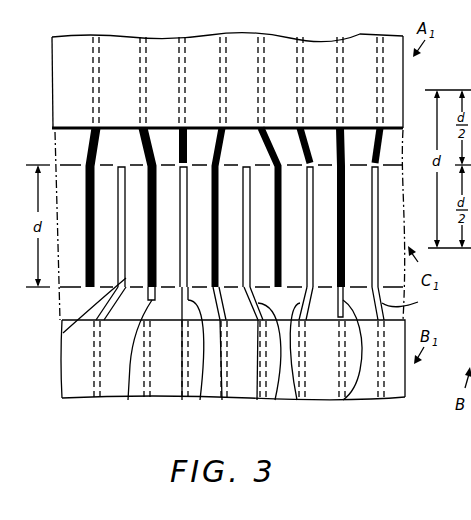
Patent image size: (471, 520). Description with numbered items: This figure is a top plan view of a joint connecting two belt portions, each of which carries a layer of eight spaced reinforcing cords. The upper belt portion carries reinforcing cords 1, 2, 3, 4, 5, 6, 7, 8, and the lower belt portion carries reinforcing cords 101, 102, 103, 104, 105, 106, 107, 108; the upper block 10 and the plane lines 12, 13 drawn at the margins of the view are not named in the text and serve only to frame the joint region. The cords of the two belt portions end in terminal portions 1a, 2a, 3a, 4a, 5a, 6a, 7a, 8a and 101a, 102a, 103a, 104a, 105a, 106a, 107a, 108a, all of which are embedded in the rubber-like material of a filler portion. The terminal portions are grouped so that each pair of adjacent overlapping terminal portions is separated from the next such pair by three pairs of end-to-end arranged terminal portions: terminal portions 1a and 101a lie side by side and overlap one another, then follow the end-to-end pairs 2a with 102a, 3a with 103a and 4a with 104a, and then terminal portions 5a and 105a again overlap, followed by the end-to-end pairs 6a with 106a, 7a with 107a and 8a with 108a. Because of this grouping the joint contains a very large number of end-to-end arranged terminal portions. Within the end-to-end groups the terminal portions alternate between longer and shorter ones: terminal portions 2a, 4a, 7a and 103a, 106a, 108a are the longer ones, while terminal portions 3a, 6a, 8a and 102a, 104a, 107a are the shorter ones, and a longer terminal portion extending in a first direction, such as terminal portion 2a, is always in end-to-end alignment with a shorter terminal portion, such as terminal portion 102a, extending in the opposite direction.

The upper insulating block 10 is at (52, 86).
The reinforcing cord 1 is at (92, 64).
The reinforcing cord 2 is at (140, 70).
The reinforcing cord 3 is at (179, 78).
The reinforcing cord 4 is at (220, 80).
The reinforcing cord 5 is at (258, 80).
The reinforcing cord 6 is at (297, 80).
The reinforcing cord 7 is at (337, 80).
The reinforcing cord 8 is at (377, 73).
The terminal portion 1a is at (95, 216).
The longer terminal portion 2a is at (148, 172).
The shorter terminal portion 3a is at (178, 151).
The longer terminal portion 4a is at (213, 150).
The terminal portion 5a is at (260, 152).
The shorter terminal portion 6a is at (300, 148).
The longer terminal portion 7a is at (338, 150).
The shorter terminal portion 8a is at (376, 148).
The lower plane 12 is at (50, 290).
The upper plane 13 is at (48, 165).
The reinforcing cord 101 is at (101, 360).
The reinforcing cord 102 is at (150, 358).
The reinforcing cord 103 is at (182, 390).
The reinforcing cord 104 is at (226, 356).
The reinforcing cord 105 is at (262, 390).
The reinforcing cord 106 is at (304, 357).
The reinforcing cord 107 is at (345, 388).
The reinforcing cord 108 is at (384, 384).
The terminal portion 101a is at (62, 327).
The shorter terminal portion 102a is at (128, 400).
The longer terminal portion 103a is at (195, 400).
The shorter terminal portion 104a is at (222, 400).
The terminal portion 105a is at (257, 400).
The longer terminal portion 106a is at (300, 400).
The shorter terminal portion 107a is at (343, 400).
The longer terminal portion 108a is at (412, 303).